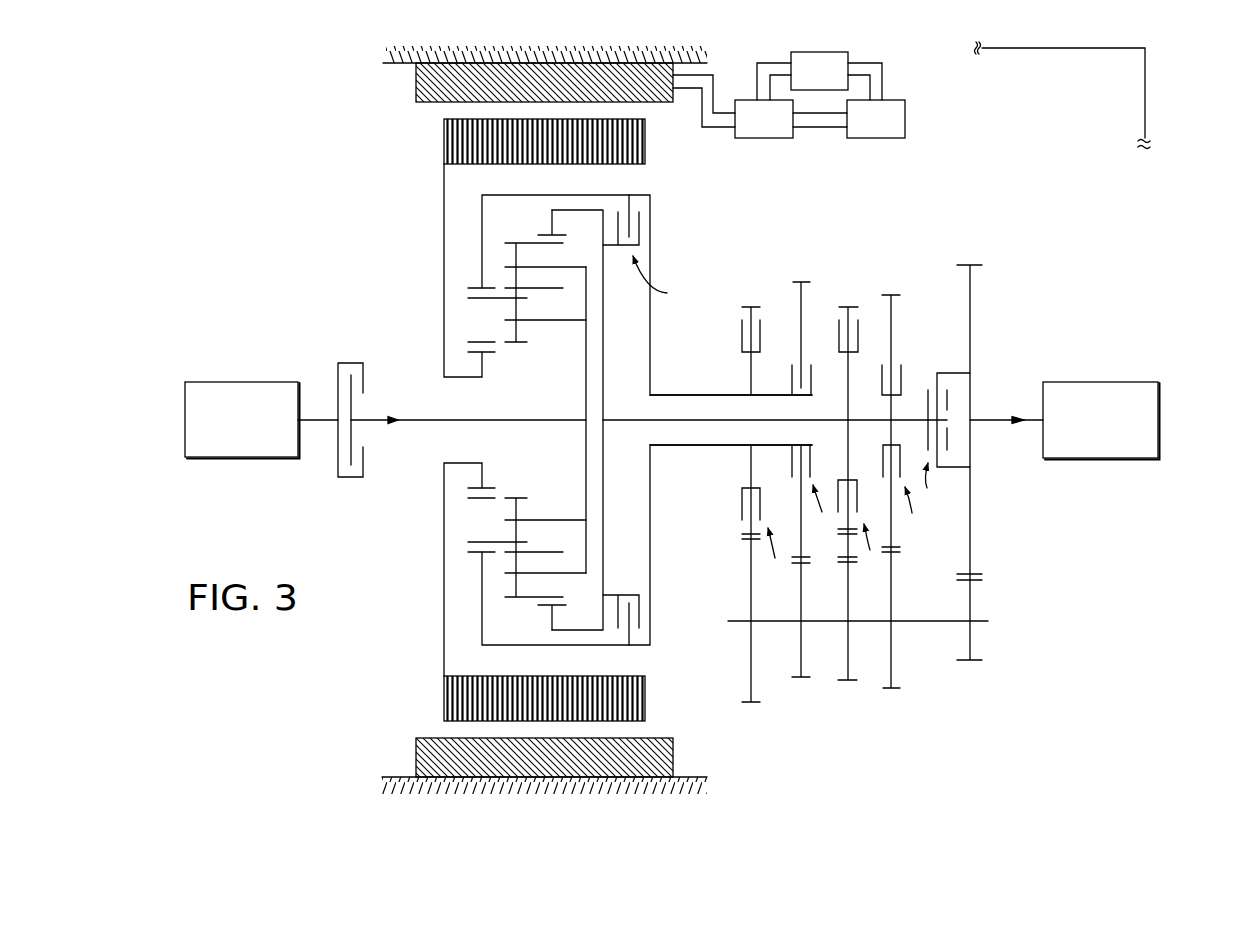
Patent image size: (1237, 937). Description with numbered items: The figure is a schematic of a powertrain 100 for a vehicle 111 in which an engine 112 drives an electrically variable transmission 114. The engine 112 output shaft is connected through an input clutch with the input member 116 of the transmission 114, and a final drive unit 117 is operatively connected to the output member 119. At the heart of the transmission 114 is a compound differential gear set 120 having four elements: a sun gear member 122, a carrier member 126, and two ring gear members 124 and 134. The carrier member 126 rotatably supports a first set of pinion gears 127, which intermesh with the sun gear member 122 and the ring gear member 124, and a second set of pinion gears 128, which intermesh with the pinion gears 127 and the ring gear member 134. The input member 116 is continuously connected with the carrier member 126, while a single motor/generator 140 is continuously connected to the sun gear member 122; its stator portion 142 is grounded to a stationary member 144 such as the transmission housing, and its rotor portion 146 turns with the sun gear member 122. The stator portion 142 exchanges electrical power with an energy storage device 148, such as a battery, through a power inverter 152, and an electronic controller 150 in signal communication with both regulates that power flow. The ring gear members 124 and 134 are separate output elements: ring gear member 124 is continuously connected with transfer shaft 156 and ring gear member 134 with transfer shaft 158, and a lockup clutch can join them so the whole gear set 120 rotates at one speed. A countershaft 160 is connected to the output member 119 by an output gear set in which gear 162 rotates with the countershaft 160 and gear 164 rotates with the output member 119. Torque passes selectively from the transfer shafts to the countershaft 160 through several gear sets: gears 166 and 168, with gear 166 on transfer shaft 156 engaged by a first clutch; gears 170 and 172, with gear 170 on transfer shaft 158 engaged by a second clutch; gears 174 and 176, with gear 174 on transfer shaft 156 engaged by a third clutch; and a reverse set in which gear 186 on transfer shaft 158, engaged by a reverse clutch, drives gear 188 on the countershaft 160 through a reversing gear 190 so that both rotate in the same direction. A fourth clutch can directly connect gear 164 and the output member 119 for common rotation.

The powertrain 100 is at (943, 146).
The vehicle 111 is at (1147, 100).
The engine 112 is at (236, 381).
The electrically variable transmission 114 is at (943, 213).
The input member 116 is at (422, 417).
The final drive unit 117 is at (1112, 381).
The output member 119 is at (990, 418).
The compound differential gear set 120 is at (674, 189).
The sun gear member 122 is at (490, 355).
The ring gear member 124 is at (471, 286).
The carrier member 126 is at (575, 270).
The first set of pinion gears 127 is at (520, 330).
The second set of pinion gears 128 is at (507, 258).
The ring gear member 134 is at (548, 233).
The motor/generator 140 is at (398, 126).
The stator portion 142 is at (413, 79).
The stationary member 144 is at (383, 61).
The rotor portion 146 is at (443, 147).
The energy storage device 148 is at (868, 138).
The electronic controller 150 is at (838, 52).
The power inverter 152 is at (765, 138).
The transfer shaft 156 is at (688, 394).
The transfer shaft 158 is at (697, 446).
The countershaft 160 is at (942, 622).
The gear 162 is at (972, 602).
The gear 164 is at (972, 549).
The gear 166 is at (742, 528).
The gear 168 is at (750, 563).
The gear 170 is at (891, 318).
The gear 172 is at (890, 675).
The gear 174 is at (802, 300).
The gear 176 is at (800, 658).
The gear 186 is at (848, 318).
The gear 188 is at (847, 658).
The reversing gear 190 is at (842, 546).